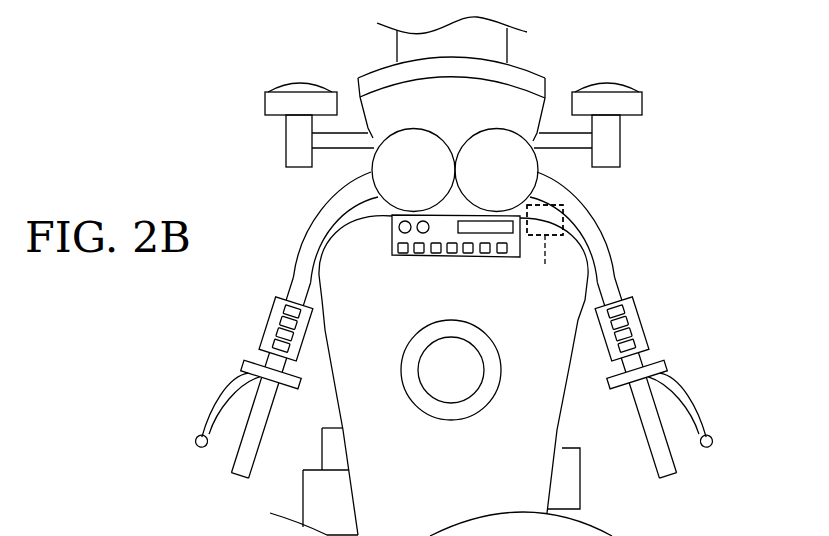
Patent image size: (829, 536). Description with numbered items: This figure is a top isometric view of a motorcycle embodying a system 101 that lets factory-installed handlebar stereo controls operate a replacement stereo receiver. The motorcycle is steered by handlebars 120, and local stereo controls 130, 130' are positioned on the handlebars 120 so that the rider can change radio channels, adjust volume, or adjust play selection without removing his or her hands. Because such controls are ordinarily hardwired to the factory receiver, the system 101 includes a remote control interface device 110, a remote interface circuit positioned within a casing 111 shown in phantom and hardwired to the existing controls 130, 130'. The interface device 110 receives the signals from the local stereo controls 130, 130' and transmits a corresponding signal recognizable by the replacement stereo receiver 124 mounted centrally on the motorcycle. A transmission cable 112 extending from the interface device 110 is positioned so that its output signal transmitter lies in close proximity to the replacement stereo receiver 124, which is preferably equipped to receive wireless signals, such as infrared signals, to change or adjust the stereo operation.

The system 101 is at (150, 85).
The remote control interface device 110 is at (558, 203).
The casing 111 is at (563, 212).
The transmission cable 112 is at (547, 250).
The handlebars 120 is at (310, 222).
The replacement stereo receiver 124 is at (390, 226).
The local stereo controls 130 is at (258, 378).
The local stereo controls 130' is at (650, 378).